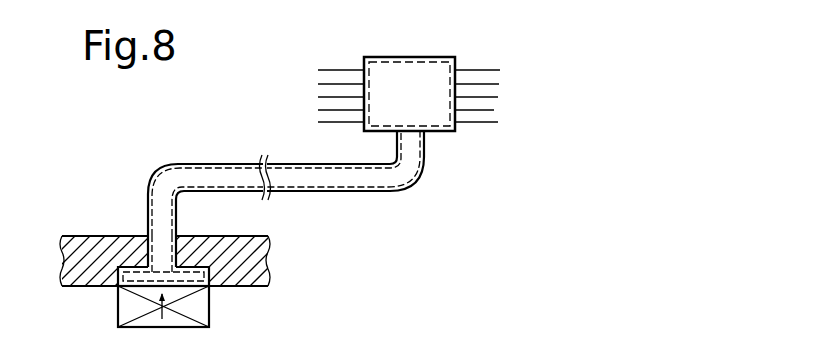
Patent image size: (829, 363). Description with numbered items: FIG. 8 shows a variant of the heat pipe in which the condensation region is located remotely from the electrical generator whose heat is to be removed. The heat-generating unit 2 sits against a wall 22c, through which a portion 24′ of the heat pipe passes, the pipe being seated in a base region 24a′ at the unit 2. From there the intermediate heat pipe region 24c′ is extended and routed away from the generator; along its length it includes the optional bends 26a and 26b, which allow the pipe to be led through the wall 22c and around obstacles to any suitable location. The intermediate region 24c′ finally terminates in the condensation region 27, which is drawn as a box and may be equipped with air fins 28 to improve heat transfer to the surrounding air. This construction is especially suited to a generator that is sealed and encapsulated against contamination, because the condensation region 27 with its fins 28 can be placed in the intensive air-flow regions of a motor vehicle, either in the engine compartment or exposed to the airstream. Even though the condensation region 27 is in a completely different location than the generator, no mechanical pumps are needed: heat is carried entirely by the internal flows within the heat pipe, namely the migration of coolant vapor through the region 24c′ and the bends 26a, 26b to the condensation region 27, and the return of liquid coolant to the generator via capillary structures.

The sensor / transducer block 2 is at (130, 306).
The wall 22c is at (256, 255).
The pipe passage through wall 24′ is at (197, 278).
The base block of pipe 24a′ is at (146, 251).
The intermediate heat pipe region 24c′ is at (166, 254).
The bend 26a is at (203, 175).
The bend 26b is at (408, 169).
The condensation region 27 is at (418, 78).
The air fins 28 is at (330, 84).